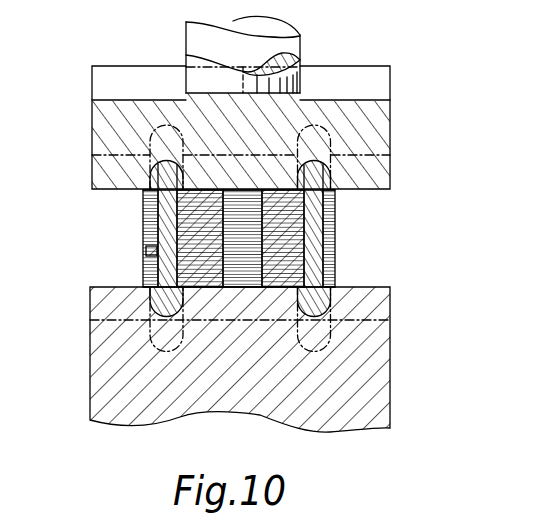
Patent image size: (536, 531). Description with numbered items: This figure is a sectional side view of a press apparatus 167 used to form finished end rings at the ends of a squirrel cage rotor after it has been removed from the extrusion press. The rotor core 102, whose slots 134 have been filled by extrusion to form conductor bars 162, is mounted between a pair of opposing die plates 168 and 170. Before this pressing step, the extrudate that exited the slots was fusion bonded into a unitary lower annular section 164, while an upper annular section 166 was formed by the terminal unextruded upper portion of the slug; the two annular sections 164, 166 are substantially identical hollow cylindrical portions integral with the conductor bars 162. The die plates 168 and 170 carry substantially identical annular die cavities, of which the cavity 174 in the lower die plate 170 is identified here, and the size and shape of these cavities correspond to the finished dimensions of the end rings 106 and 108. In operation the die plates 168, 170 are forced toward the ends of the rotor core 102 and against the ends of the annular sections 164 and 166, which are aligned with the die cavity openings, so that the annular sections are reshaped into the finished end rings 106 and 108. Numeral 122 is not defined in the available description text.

The rotor core 102 is at (336, 222).
The end ring 106 is at (325, 298).
The end ring 108 is at (321, 183).
The left spacer sleeve 122 is at (145, 203).
The slots 134 is at (146, 253).
The conductor bars 162 is at (336, 245).
The lower annular section 164 is at (358, 319).
The upper annular section 166 is at (163, 143).
The press apparatus 167 is at (79, 193).
The die plate 168 is at (117, 75).
The die plate 170 is at (105, 329).
The annular die cavity 174 is at (182, 292).